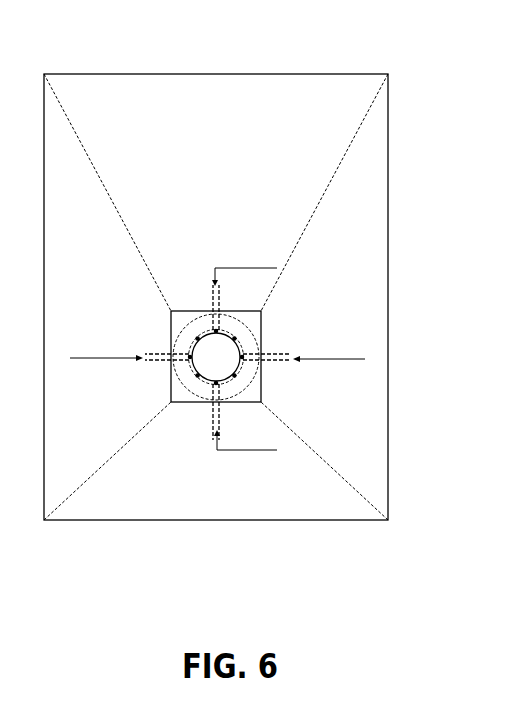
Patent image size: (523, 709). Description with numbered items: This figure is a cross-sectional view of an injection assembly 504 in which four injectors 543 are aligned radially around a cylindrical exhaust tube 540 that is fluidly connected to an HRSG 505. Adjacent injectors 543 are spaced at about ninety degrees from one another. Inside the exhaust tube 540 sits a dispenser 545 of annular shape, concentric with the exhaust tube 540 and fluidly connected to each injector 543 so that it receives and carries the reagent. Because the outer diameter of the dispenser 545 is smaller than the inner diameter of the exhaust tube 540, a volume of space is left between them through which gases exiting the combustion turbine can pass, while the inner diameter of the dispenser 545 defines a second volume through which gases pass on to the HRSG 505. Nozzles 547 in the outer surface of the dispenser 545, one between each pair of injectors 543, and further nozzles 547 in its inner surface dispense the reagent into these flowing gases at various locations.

The injection assembly 504 is at (286, 290).
The HRSG 505 is at (226, 109).
The exhaust tube 540 is at (178, 326).
The injectors 543 is at (214, 307).
The dispenser 545 is at (238, 367).
The nozzles 547 is at (238, 341).